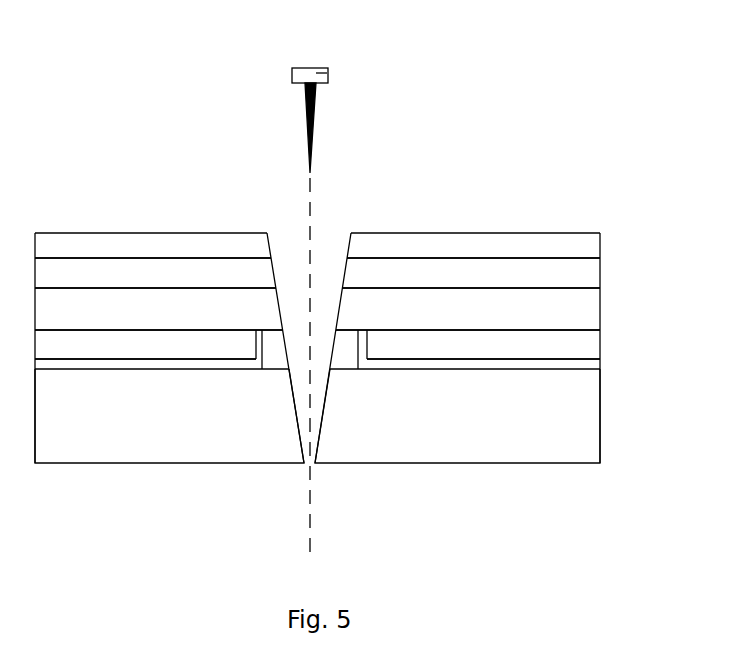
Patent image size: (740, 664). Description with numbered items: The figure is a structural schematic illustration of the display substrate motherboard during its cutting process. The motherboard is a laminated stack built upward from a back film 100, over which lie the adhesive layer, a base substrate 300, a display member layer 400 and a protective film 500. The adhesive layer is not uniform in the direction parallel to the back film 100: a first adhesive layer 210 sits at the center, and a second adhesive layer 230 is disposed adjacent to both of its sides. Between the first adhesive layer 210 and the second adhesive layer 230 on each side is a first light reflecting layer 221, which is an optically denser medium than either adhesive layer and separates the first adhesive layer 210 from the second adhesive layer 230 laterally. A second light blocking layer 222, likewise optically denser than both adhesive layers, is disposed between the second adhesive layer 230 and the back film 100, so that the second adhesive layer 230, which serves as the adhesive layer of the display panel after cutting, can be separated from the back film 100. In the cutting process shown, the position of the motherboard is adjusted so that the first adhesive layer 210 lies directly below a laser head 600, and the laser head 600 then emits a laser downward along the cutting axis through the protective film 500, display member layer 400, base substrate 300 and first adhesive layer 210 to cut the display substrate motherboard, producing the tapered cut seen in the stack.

The back film 100 is at (545, 442).
The first adhesive layer 210 is at (341, 350).
The first light reflecting layer 221 is at (366, 336).
The second light blocking layer 222 is at (585, 362).
The second adhesive layer 230 is at (587, 348).
The base substrate 300 is at (587, 315).
The display member layer 400 is at (587, 277).
The protective film 500 is at (521, 242).
The laser head 600 is at (327, 73).